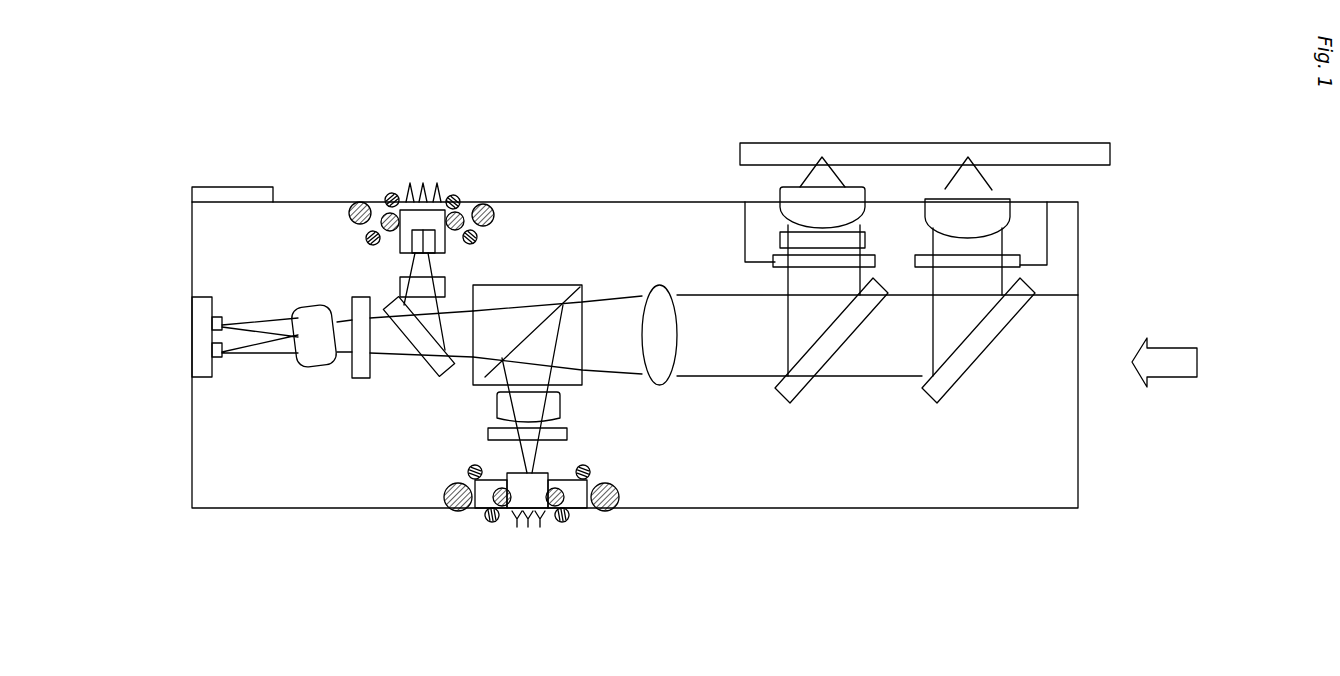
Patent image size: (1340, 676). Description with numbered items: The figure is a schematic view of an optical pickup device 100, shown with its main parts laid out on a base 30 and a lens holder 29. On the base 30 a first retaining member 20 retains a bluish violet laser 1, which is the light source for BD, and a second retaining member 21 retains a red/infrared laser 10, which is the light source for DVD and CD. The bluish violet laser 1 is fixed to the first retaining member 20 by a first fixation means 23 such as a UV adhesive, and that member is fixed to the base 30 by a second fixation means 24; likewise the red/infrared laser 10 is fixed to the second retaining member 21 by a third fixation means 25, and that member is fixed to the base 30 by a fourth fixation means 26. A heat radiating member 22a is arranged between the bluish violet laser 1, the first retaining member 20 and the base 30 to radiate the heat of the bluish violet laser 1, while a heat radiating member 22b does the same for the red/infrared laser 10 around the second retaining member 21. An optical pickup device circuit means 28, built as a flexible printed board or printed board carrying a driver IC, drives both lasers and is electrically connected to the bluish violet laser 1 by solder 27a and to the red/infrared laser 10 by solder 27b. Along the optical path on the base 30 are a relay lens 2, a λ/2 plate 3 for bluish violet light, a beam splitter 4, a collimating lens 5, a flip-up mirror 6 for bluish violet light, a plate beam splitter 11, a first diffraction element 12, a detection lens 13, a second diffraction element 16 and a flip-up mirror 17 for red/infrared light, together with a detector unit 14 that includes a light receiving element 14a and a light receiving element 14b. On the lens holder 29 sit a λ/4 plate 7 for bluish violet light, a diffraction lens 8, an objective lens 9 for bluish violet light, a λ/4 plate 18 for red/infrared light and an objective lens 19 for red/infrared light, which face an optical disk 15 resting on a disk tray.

The bluish violet laser 1 is at (550, 466).
The relay lens 2 is at (555, 403).
The λ/2 plate for bluish violet light 3 is at (488, 432).
The beam splitter 4 is at (445, 279).
The collimating lens 5 is at (662, 358).
The flip-up mirror for bluish violet light 6 is at (822, 360).
The λ/4 plate for bluish violet light 7 is at (777, 262).
The diffraction lens 8 is at (781, 238).
The objective lens for bluish violet light 9 is at (790, 198).
The red/infrared laser 10 is at (445, 252).
The plate beam splitter 11 is at (397, 310).
The first diffraction element 12 is at (362, 378).
The detection lens 13 is at (303, 357).
The detector unit 14 is at (203, 365).
The light receiving element 14a is at (217, 362).
The light receiving element 14b is at (222, 318).
The optical disk 15 is at (773, 157).
The second diffraction element 16 is at (508, 302).
The flip-up mirror for red/infrared light 17 is at (1078, 296).
The λ/4 plate for red/infrared light 18 is at (1020, 258).
The objective lens for red/infrared light 19 is at (993, 213).
The first retaining member 20 is at (575, 500).
The second retaining member 21 is at (472, 200).
The heat radiating member 22a is at (450, 510).
The heat radiating member 22b is at (353, 202).
The first fixation means 23 is at (492, 523).
The second fixation means 24 is at (468, 473).
The third fixation means 25 is at (393, 198).
The fourth fixation means 26 is at (366, 238).
The solder 27a is at (537, 515).
The solder 27b is at (420, 200).
The optical pickup device circuit means 28 is at (220, 197).
The lens holder 29 is at (1040, 218).
The base 30 is at (1045, 493).
The optical pickup device 100 is at (1191, 362).